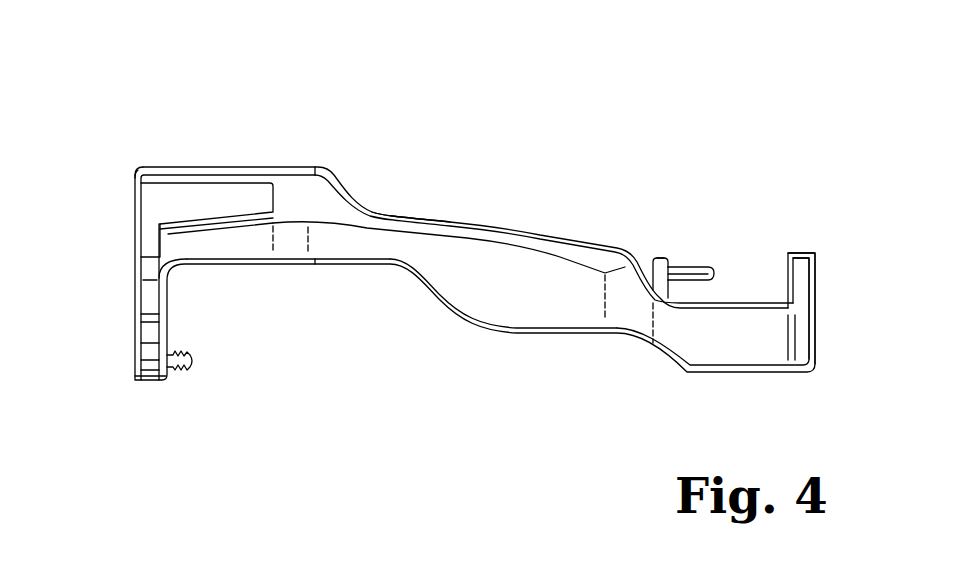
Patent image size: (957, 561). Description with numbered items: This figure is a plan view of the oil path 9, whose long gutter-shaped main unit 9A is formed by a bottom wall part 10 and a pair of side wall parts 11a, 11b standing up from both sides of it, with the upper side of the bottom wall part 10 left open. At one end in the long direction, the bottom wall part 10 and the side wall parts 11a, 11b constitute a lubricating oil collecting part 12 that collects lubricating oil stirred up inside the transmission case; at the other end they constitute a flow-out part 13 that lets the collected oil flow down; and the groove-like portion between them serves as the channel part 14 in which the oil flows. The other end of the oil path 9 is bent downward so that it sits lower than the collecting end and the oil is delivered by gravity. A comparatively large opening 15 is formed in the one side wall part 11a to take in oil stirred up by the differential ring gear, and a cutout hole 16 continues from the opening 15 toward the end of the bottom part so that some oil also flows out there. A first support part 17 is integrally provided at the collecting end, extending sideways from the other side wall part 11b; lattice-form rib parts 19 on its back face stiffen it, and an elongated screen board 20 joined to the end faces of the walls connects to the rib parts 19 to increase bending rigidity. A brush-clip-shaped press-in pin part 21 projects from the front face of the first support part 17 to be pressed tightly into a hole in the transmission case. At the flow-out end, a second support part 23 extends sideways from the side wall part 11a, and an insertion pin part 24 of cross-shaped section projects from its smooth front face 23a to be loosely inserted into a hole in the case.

The oil path 9 is at (505, 70).
The main unit 9A is at (428, 209).
The bottom wall part 10 is at (493, 277).
The side wall part 11a is at (358, 220).
The side wall part 11b is at (365, 266).
The lubricating oil collecting part 12 is at (185, 165).
The flow-out part 13 is at (817, 270).
The channel part 14 is at (538, 298).
The opening 15 is at (230, 197).
The cutout hole 16 is at (150, 246).
The first support part 17 is at (140, 387).
The lattice-form rib parts 19 is at (138, 345).
The screen board 20 is at (133, 204).
The press-in pin part 21 is at (179, 371).
The second support part 23 is at (657, 258).
The front face 23a is at (672, 262).
The insertion pin part 24 is at (703, 263).